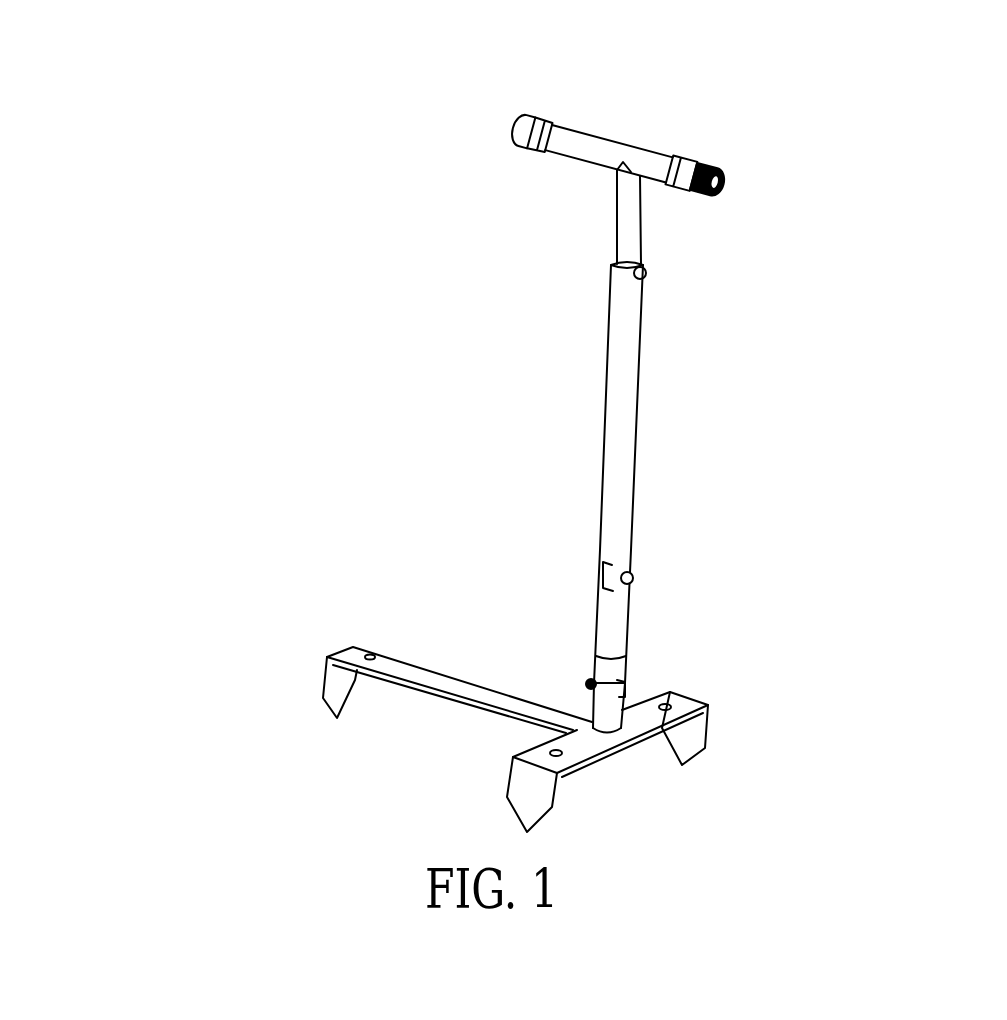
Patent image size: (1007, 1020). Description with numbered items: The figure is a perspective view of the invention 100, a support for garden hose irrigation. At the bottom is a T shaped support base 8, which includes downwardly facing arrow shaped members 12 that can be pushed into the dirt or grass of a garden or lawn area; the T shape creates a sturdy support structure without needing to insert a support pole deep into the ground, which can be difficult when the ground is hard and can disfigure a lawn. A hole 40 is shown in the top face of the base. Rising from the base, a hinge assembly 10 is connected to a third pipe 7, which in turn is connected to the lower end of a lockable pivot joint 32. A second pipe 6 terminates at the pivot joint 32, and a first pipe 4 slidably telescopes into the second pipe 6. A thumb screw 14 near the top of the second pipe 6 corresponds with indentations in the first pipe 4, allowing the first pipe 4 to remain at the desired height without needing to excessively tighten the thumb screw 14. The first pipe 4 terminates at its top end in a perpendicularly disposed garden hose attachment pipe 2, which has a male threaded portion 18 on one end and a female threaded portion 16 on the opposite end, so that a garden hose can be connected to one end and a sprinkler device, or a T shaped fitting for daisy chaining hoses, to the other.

The invention 100 is at (801, 102).
The garden hose attachment pipe 2 is at (710, 130).
The male threaded portion 18 is at (508, 132).
The female threaded portion 16 is at (730, 172).
The first pipe 4 is at (610, 220).
The thumb screw 14 is at (650, 272).
The second pipe 6 is at (580, 277).
The pivot joint 32 is at (650, 545).
The third pipe 7 is at (558, 668).
The hinge assembly 10 is at (627, 682).
The T shaped support base 8 is at (292, 617).
The mounting hole 40 is at (372, 653).
The arrow shaped members 12 is at (690, 765).